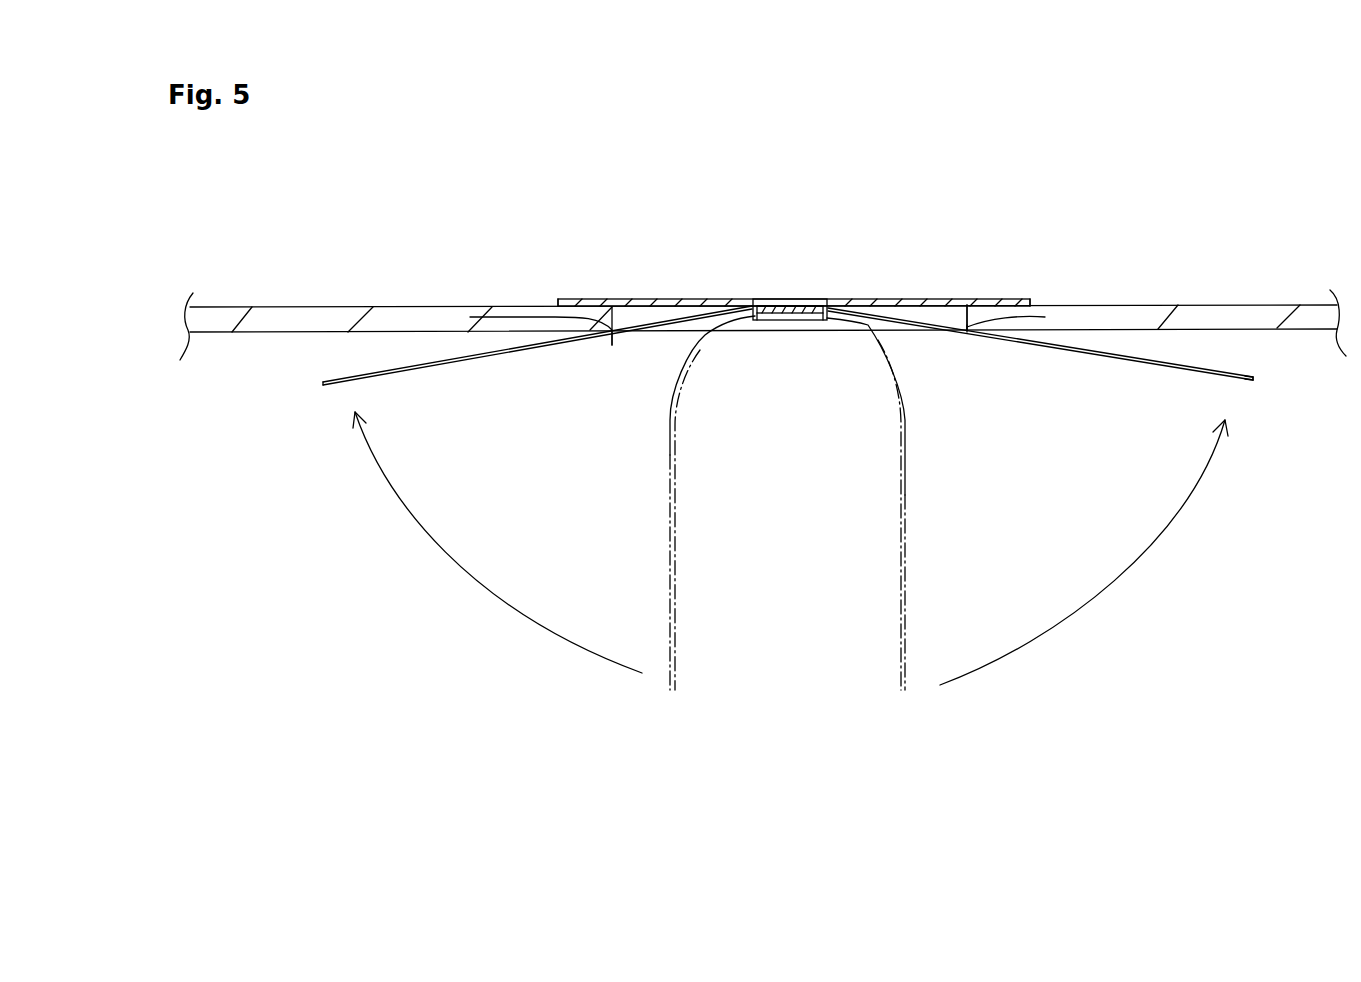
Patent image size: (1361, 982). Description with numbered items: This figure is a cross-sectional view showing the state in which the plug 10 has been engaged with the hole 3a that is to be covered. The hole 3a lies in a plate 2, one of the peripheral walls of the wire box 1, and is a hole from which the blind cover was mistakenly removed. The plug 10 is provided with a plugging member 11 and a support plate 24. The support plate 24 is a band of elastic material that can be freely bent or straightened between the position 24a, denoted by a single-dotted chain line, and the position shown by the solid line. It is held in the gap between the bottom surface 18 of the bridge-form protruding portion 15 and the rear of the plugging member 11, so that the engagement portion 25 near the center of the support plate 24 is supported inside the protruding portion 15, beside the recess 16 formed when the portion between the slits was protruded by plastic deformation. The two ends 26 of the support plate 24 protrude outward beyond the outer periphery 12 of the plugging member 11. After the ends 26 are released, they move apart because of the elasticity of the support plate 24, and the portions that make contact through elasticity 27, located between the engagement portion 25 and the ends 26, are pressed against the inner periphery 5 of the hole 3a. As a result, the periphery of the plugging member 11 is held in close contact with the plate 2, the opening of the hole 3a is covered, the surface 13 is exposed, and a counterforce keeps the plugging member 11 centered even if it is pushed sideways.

The wire box 1 is at (1194, 287).
The plate 2 is at (1123, 315).
The hole 3a is at (650, 300).
The inner periphery 5 is at (470, 317).
The plug 10 is at (893, 287).
The plugging member 11 is at (967, 304).
The outer periphery 12 is at (556, 303).
The surface 13 is at (860, 298).
The protruding portion 15 is at (800, 320).
The recess 16 is at (760, 300).
The bottom surface 18 is at (772, 322).
The support plate 24 is at (470, 358).
The position of support plate 24a is at (906, 548).
The engagement portion 25 is at (795, 322).
The ends 26 is at (1258, 379).
The portions that make contact through elasticity 27 is at (610, 335).